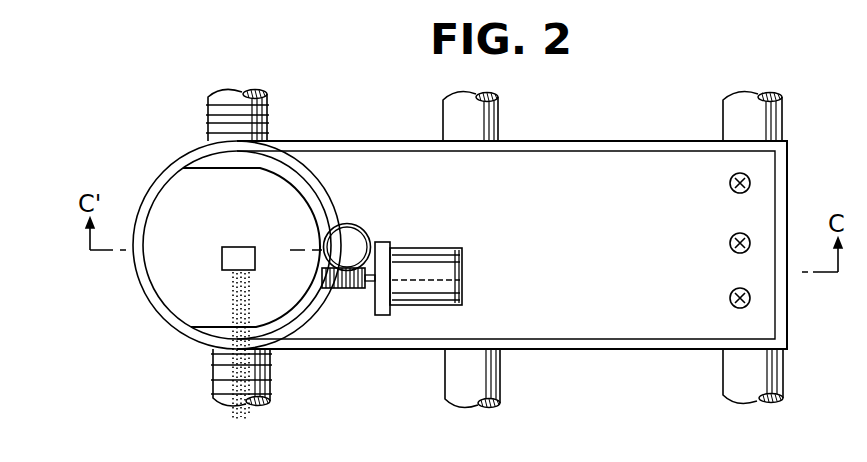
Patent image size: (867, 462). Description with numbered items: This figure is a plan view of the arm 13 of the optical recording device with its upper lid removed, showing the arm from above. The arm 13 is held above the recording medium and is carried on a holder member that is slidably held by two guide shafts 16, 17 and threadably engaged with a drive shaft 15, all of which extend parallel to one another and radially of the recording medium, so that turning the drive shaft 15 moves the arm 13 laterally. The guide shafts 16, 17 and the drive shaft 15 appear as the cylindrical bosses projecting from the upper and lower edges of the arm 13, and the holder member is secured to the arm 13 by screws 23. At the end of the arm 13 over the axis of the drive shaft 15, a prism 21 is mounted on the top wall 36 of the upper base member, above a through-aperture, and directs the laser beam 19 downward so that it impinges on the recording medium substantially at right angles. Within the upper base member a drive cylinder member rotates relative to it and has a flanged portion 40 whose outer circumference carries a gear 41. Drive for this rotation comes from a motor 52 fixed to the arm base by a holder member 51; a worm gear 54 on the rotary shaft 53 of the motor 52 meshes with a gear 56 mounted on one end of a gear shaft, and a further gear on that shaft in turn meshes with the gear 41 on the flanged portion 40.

The arm 13 is at (128, 279).
The drive shaft 15 is at (262, 118).
The guide shaft 16 is at (487, 117).
The guide shaft 17 is at (732, 110).
The laser beam 19 is at (227, 399).
The prism 21 is at (230, 262).
The screws 23 is at (730, 183).
The top wall 36 is at (178, 287).
The flanged portion 40 is at (315, 211).
The gear 41 is at (304, 178).
The holder member 51 is at (383, 248).
The motor 52 is at (448, 270).
The rotary shaft 53 is at (369, 282).
The worm gear 54 is at (328, 289).
The gear 56 is at (350, 233).